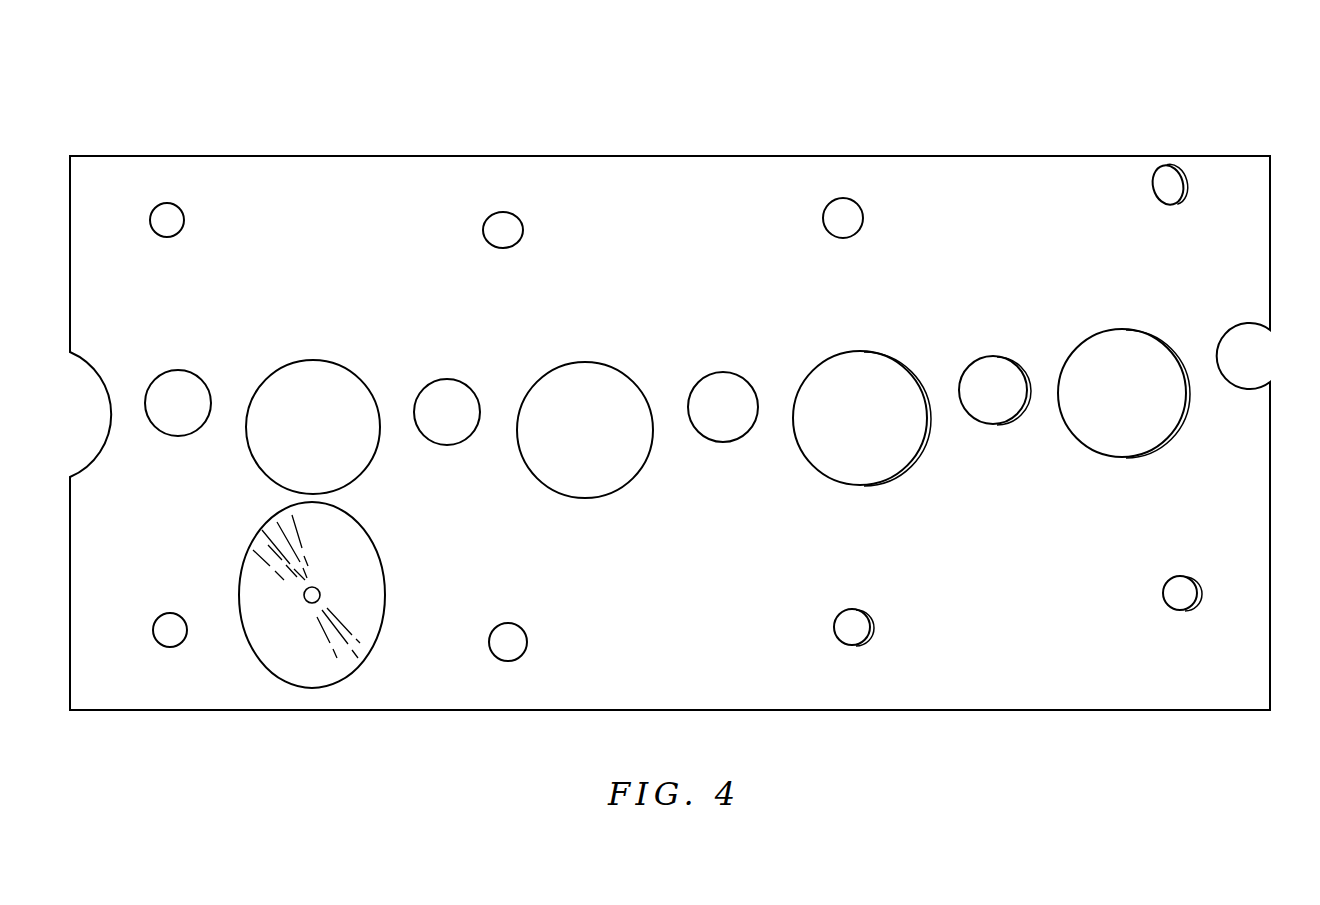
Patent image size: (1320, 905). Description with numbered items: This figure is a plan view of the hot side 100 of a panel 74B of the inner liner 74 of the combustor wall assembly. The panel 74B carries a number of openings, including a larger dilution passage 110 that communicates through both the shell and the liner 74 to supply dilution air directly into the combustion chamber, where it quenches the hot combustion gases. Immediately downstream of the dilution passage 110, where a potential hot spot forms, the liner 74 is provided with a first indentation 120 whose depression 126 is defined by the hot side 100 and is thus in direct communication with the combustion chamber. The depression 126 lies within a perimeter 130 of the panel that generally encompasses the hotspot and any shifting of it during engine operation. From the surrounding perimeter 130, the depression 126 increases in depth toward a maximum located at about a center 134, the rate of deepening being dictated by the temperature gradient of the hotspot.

The inner liner 74 is at (384, 114).
The heat shield or panel 74B is at (305, 157).
The dilution passage 110 is at (333, 437).
The first indentation 120 is at (322, 576).
The hot side 100 is at (369, 575).
The perimeter 130 is at (250, 551).
The center 134 is at (304, 595).
The depression 126 is at (345, 618).